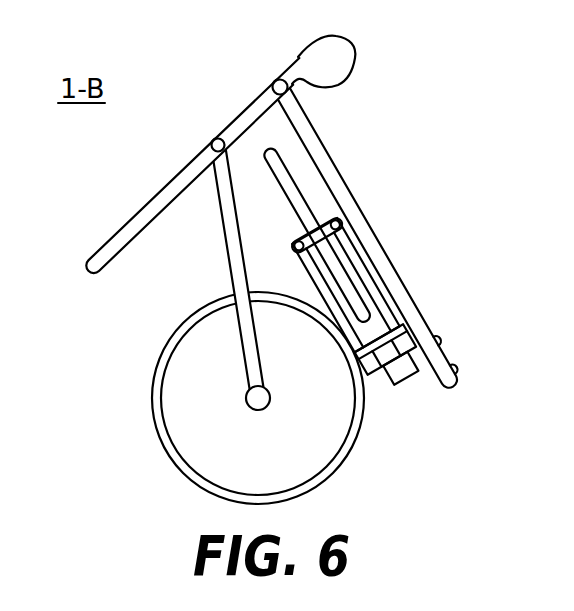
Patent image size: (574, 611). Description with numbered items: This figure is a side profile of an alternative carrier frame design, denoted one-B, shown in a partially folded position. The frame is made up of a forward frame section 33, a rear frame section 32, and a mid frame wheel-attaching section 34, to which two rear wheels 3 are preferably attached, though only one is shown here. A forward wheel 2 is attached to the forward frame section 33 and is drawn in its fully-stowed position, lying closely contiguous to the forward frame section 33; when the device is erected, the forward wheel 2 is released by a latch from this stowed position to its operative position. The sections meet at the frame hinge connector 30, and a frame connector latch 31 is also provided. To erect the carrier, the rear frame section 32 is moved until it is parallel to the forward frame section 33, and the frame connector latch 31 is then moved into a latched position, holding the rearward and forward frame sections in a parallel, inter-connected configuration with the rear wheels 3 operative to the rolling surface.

The forward wheel 2 is at (283, 165).
The rear wheel 3 is at (172, 403).
The frame hinge connector 30 is at (273, 85).
The frame connector latch 31 is at (325, 62).
The rear frame section 32 is at (126, 231).
The forward frame section 33 is at (312, 151).
The mid frame wheel-attaching section 34 is at (229, 254).